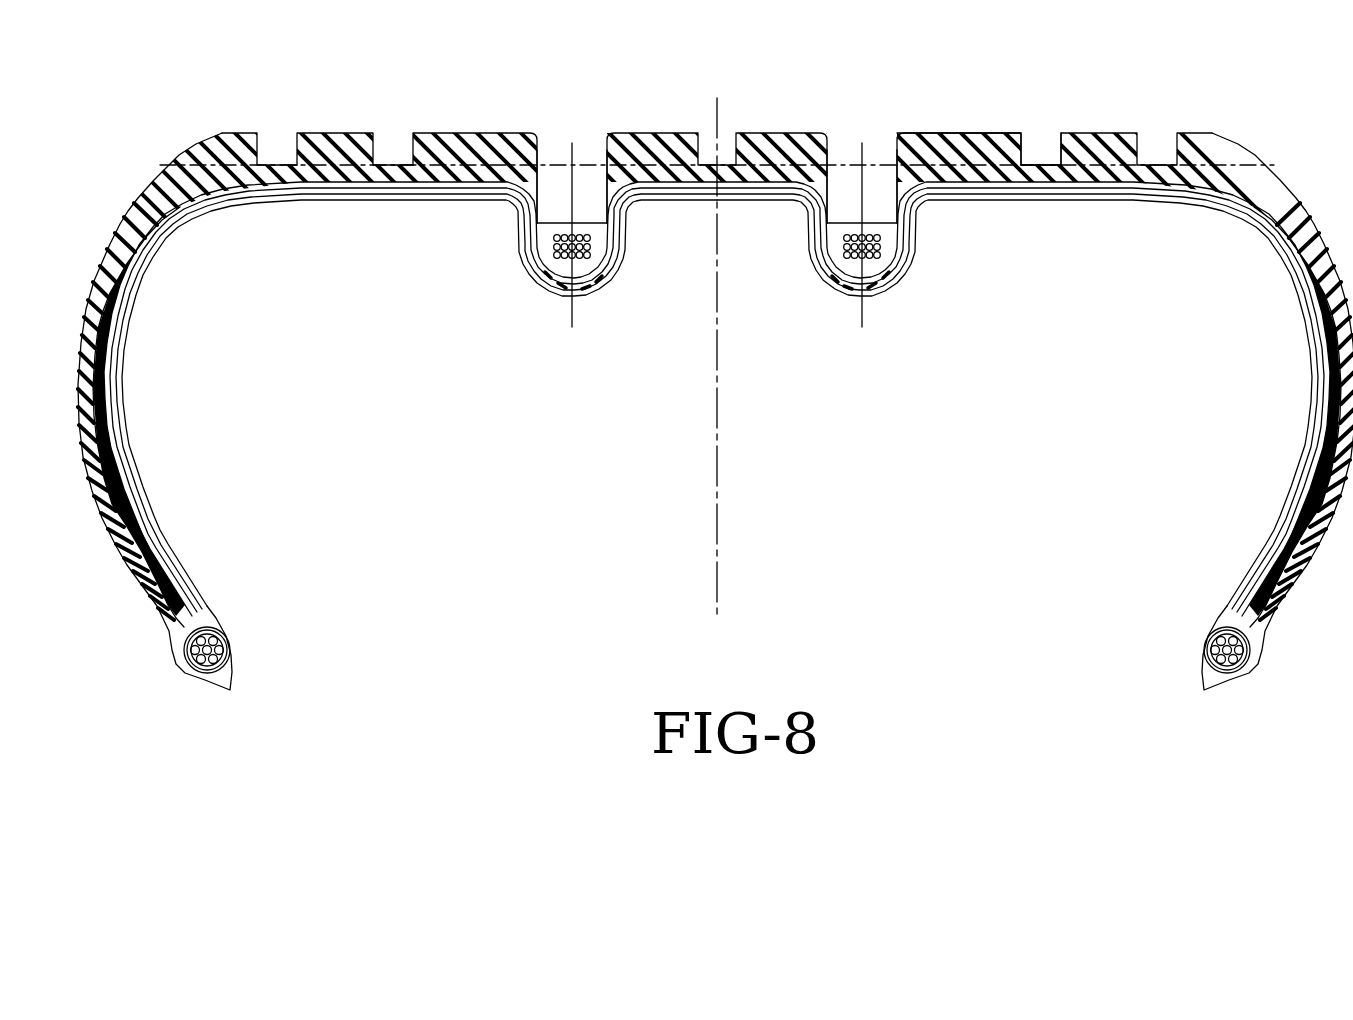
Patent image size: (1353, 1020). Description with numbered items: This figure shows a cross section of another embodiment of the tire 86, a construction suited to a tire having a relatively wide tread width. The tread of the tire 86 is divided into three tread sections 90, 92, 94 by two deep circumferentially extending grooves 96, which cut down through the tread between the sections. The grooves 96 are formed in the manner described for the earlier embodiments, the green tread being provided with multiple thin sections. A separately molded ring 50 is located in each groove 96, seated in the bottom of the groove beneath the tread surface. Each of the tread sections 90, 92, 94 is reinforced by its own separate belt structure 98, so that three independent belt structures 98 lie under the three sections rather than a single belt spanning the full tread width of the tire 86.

The separately molded ring 50 is at (553, 215).
The tire 86 is at (118, 215).
The tread section 90 is at (333, 133).
The tread section 92 is at (657, 133).
The tread section 94 is at (997, 133).
The deep circumferentially extending groove 96 is at (600, 178).
The belt structure 98 is at (362, 188).